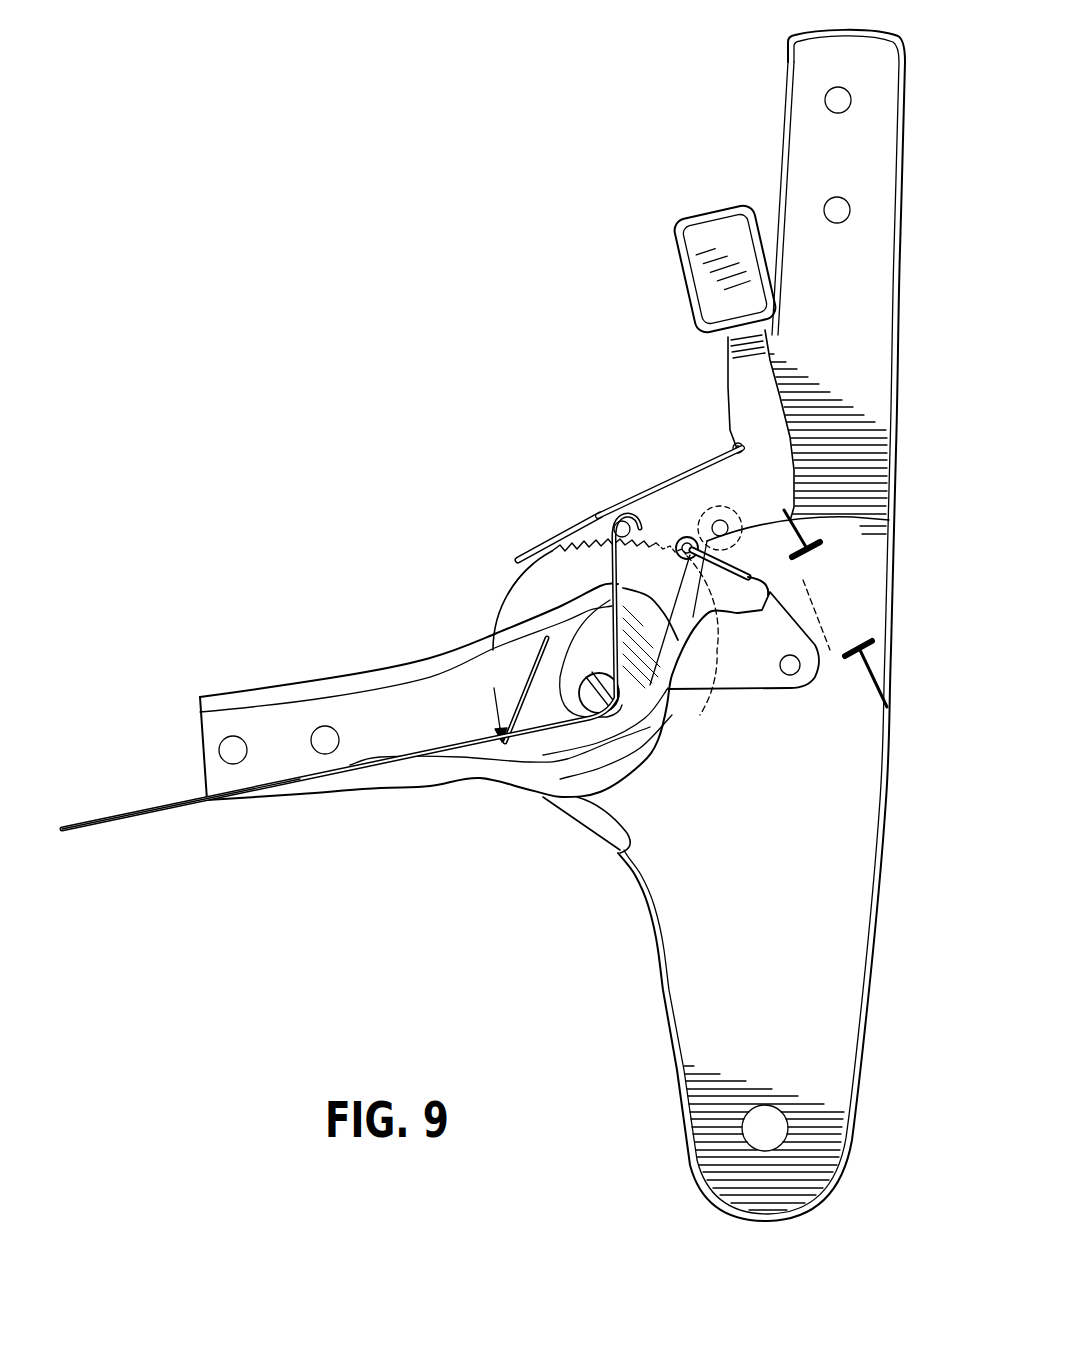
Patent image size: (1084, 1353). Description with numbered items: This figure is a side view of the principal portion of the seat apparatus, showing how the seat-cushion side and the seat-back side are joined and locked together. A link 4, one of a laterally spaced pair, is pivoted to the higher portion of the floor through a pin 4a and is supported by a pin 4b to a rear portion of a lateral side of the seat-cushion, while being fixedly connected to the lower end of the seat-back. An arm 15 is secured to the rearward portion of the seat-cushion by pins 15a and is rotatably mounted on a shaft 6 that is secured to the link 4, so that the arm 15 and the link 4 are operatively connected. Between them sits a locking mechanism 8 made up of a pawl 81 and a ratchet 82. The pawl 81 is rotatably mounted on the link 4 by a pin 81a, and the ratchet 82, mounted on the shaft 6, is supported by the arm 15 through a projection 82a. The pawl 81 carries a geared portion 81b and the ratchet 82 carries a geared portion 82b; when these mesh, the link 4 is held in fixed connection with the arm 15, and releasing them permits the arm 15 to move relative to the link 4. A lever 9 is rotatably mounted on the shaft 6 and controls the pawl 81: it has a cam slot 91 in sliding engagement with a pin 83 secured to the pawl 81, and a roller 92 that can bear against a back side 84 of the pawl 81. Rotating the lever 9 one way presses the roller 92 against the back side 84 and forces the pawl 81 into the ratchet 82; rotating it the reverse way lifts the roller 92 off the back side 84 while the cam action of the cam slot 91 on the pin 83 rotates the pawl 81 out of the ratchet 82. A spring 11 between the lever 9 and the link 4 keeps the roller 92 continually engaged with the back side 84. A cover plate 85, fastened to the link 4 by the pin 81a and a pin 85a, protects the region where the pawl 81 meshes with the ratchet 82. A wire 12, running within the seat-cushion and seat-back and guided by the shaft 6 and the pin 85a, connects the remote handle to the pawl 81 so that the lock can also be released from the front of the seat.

The link 4 is at (673, 923).
The pin 4a is at (762, 1117).
The pin 4b is at (833, 208).
The shaft 6 is at (728, 595).
The locking mechanism 8 is at (537, 537).
The lever 9 is at (717, 247).
The spring 11 is at (886, 676).
The wire 12 is at (158, 800).
The arm 15 is at (278, 715).
The pins 15a is at (325, 742).
The pawl 81 is at (812, 643).
The pin 81a is at (800, 670).
The geared portion 81b is at (622, 512).
The ratchet 82 is at (550, 573).
The projection 82a is at (500, 595).
The geared portion 82b is at (692, 690).
The pin 83 is at (853, 518).
The back side 84 is at (730, 650).
The cover plate 85 is at (760, 688).
The pin 85a is at (607, 507).
The cam slot 91 is at (770, 593).
The roller 92 is at (828, 570).